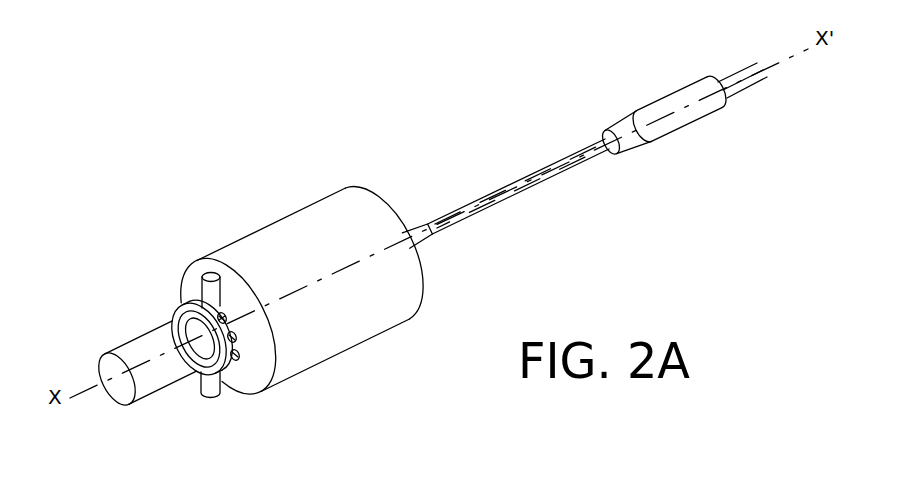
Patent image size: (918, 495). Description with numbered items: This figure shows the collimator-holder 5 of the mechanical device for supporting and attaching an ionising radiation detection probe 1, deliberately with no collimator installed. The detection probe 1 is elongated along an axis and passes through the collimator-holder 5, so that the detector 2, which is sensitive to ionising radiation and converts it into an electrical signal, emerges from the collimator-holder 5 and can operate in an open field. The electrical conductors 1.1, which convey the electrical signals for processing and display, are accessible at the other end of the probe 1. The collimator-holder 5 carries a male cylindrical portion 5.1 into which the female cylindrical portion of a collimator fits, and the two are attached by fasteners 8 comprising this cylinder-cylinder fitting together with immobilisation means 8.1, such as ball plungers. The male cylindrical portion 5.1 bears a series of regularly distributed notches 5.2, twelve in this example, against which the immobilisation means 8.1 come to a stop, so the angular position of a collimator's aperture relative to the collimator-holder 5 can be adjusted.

The ionising radiation detection probe 1 is at (528, 190).
The electrical conductors 1.1 is at (738, 88).
The detector 2 is at (165, 372).
The collimator-holder 5 is at (400, 292).
The male cylindrical portion 5.1 is at (250, 348).
The notches 5.2 is at (237, 333).
The fasteners 8 is at (159, 275).
The immobilisation means 8.1 is at (197, 261).